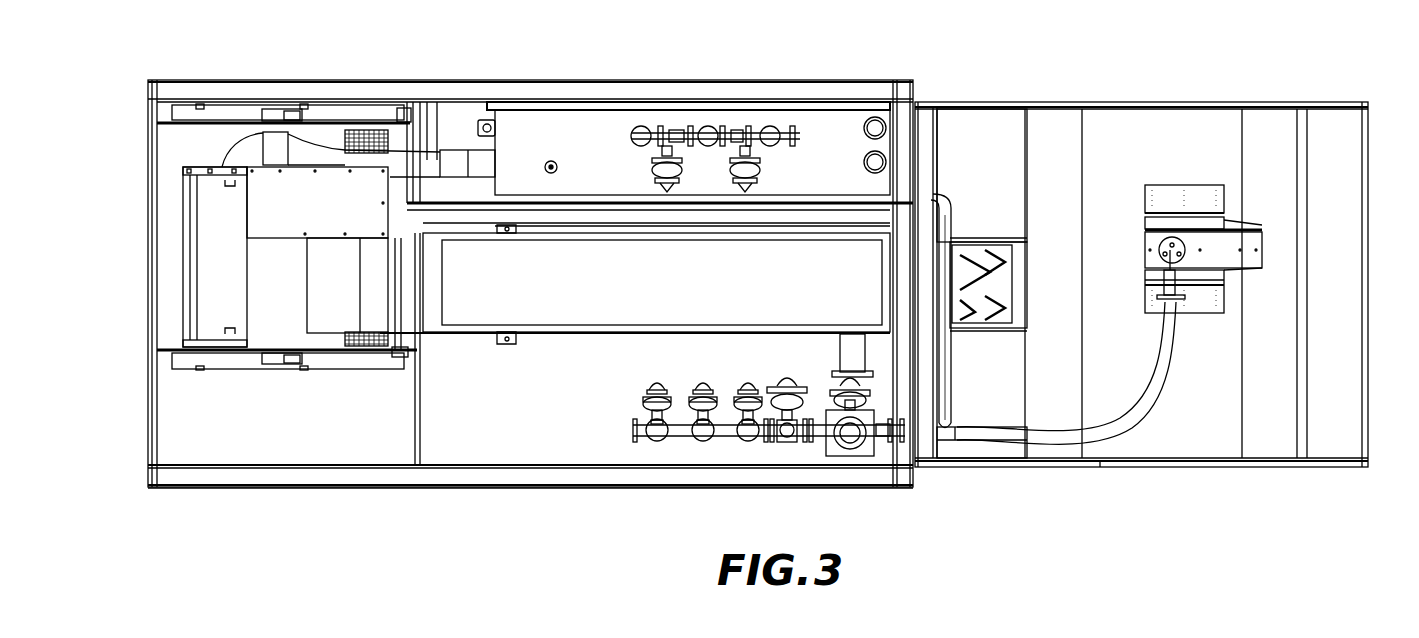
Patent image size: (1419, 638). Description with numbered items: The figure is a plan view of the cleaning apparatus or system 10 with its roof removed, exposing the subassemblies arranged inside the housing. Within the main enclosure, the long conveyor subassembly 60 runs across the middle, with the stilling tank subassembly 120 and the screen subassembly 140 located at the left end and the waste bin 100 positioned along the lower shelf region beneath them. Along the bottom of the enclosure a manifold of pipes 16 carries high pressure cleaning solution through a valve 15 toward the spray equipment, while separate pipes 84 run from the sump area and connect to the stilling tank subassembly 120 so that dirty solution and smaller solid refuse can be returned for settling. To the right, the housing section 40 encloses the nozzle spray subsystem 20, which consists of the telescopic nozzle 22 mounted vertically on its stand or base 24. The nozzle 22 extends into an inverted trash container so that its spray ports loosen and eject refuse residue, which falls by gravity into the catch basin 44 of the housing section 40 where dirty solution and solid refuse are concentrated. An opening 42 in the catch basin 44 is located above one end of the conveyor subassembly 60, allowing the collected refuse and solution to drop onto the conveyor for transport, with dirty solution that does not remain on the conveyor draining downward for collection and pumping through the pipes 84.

The apparatus or system 10 is at (563, 142).
The valve 15 is at (866, 462).
The pipes 16 is at (973, 433).
The nozzle spray subsystem 20 is at (1281, 213).
The telescopic nozzle 22 is at (1185, 283).
The stand or base 24 is at (1250, 253).
The housing section 40 is at (1057, 128).
The opening 42 is at (977, 235).
The catch basin 44 is at (1000, 163).
The conveyor subassembly 60 is at (649, 300).
The pipes 84 is at (838, 203).
The waste bin 100 is at (358, 354).
The stilling tank subassembly 120 is at (305, 198).
The screen subassembly 140 is at (204, 267).